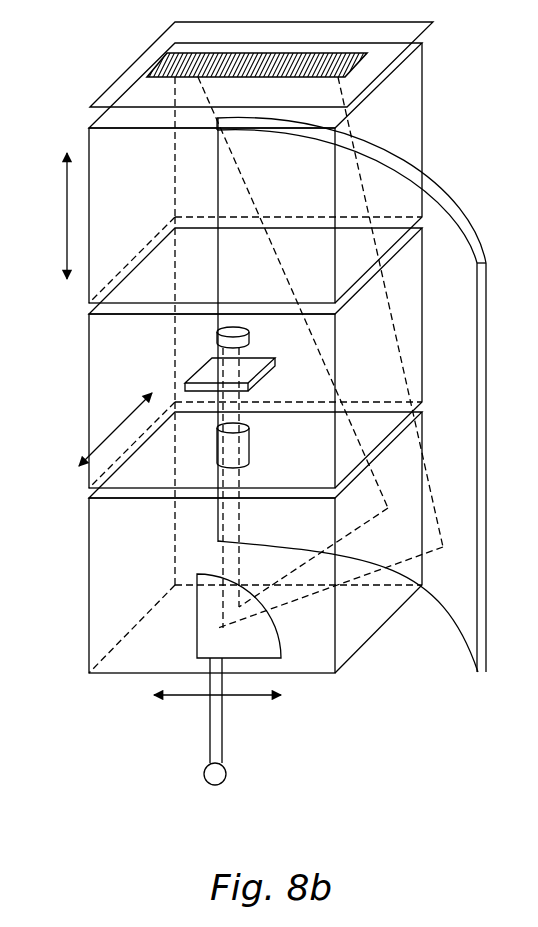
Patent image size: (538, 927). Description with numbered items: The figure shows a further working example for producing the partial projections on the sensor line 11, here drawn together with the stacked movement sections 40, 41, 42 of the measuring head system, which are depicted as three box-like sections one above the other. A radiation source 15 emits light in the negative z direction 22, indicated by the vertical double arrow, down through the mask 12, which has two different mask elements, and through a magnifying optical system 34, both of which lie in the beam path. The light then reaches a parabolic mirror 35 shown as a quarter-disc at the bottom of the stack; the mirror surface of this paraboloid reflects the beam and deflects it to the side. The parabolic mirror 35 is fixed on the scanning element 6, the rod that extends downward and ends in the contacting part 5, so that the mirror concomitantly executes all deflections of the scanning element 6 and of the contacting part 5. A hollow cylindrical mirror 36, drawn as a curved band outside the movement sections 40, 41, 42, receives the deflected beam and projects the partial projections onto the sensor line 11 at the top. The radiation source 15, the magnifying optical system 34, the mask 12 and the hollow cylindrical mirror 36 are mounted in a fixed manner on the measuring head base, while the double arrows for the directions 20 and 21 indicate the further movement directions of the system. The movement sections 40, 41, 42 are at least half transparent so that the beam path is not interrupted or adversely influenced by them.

The contacting part 5 is at (255, 767).
The scanning element 6 is at (273, 440).
The sensor line 11 is at (223, 58).
The mask 12 is at (250, 379).
The radiation source 15 is at (261, 333).
The direction 20 is at (194, 711).
The direction 21 is at (97, 429).
The negative z direction 22 is at (38, 216).
The magnifying optical system 34 is at (260, 445).
The parabolic mirror 35 is at (261, 616).
The hollow cylindrical mirror 36 is at (351, 394).
The movement section 40 is at (223, 175).
The movement section 41 is at (223, 352).
The movement section 42 is at (222, 537).